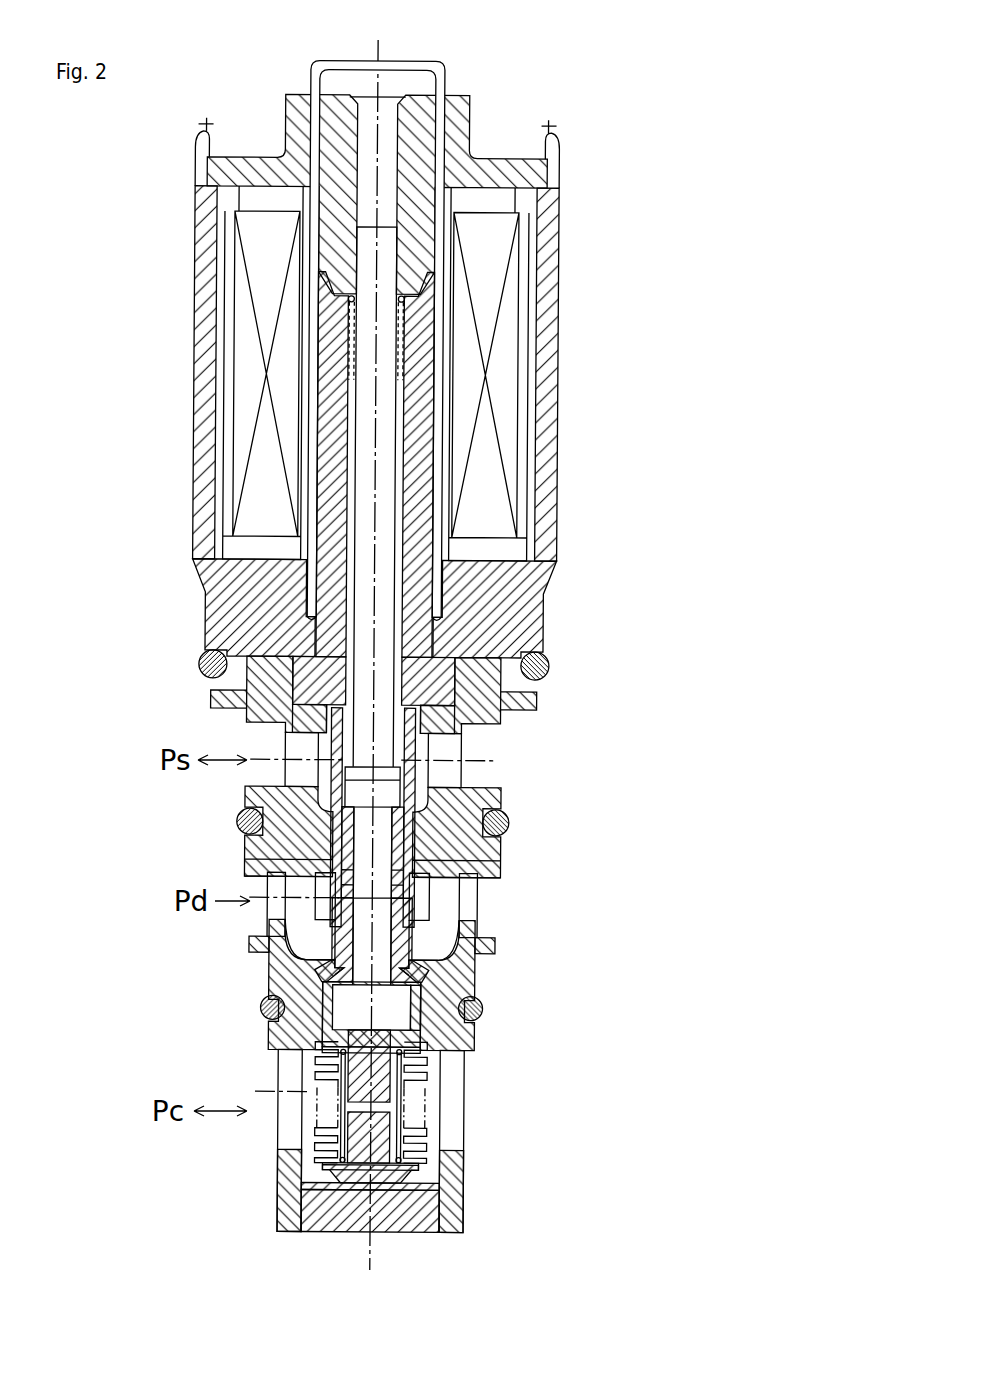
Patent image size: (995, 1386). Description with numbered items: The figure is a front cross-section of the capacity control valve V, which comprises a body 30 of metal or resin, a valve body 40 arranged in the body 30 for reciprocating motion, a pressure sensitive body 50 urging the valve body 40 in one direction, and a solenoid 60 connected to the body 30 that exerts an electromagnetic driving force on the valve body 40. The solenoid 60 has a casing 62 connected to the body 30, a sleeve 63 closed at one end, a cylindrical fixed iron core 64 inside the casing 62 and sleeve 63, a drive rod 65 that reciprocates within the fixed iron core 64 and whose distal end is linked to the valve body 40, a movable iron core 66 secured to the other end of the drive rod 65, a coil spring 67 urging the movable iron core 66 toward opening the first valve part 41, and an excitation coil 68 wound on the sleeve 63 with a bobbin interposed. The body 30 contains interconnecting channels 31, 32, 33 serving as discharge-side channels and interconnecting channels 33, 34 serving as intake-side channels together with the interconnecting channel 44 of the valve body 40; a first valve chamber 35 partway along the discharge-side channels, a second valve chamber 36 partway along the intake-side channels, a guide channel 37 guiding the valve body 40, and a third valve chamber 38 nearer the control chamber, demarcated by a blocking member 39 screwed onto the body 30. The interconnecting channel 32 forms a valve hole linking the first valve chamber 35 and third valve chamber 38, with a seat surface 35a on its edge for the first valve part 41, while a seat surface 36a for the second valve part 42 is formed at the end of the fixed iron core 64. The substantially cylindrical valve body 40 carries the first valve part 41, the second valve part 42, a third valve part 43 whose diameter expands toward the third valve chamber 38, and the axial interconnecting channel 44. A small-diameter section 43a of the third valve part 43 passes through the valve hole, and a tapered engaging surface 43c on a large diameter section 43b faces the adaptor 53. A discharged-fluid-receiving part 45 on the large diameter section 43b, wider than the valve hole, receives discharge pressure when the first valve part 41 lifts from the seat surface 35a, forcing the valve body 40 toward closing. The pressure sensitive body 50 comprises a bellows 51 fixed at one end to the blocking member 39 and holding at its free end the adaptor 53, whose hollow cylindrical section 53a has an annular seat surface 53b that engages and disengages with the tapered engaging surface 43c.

The capacity control valve V is at (91, 261).
The body 30 is at (497, 790).
The interconnecting channel 31 is at (318, 900).
The interconnecting channel 32 is at (300, 972).
The interconnecting channel 33 is at (300, 1068).
The interconnecting channel 34 is at (335, 772).
The first valve chamber 35 is at (330, 862).
The seat surface 35a is at (300, 950).
The second valve chamber 36 is at (330, 748).
The seat surface 36a is at (462, 731).
The guide channel 37 is at (413, 877).
The third valve chamber 38 is at (306, 1128).
The blocking member 39 is at (390, 1205).
The valve body 40 is at (413, 867).
The first valve part 41 is at (477, 920).
The second valve part 42 is at (430, 740).
The third valve part 43 is at (473, 982).
The small-diameter section 43a is at (490, 936).
The large diameter section 43b is at (472, 1030).
The tapered engaging surface 43c is at (470, 1033).
The interconnecting channel 44 is at (440, 920).
The discharged-fluid-receiving part 45 is at (470, 1002).
The pressure sensitive body 50 is at (440, 1160).
The bellows 51 is at (340, 1142).
The adaptor 53 is at (416, 1134).
The hollow cylindrical section 53a is at (425, 1045).
The annular seat surface 53b is at (340, 1036).
The solenoid 60 is at (193, 370).
The casing 62 is at (520, 612).
The sleeve 63 is at (436, 68).
The fixed iron core 64 is at (420, 553).
The drive rod 65 is at (378, 430).
The movable iron core 66 is at (430, 165).
The coil spring 67 is at (400, 340).
The excitation coil 68 is at (492, 460).